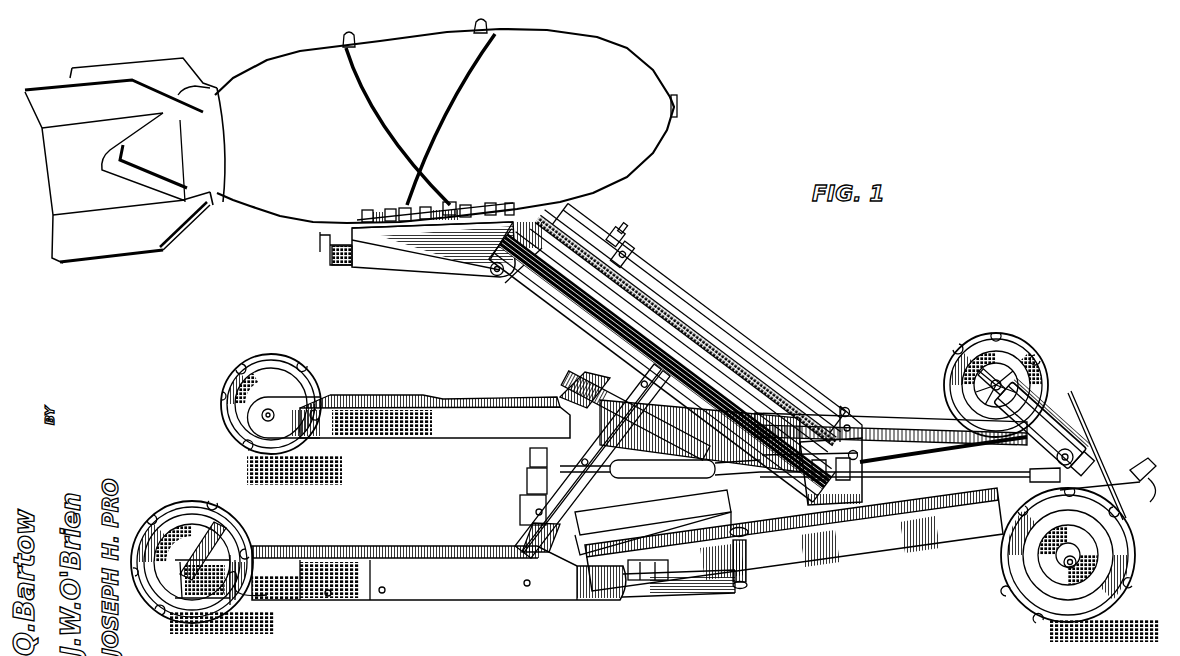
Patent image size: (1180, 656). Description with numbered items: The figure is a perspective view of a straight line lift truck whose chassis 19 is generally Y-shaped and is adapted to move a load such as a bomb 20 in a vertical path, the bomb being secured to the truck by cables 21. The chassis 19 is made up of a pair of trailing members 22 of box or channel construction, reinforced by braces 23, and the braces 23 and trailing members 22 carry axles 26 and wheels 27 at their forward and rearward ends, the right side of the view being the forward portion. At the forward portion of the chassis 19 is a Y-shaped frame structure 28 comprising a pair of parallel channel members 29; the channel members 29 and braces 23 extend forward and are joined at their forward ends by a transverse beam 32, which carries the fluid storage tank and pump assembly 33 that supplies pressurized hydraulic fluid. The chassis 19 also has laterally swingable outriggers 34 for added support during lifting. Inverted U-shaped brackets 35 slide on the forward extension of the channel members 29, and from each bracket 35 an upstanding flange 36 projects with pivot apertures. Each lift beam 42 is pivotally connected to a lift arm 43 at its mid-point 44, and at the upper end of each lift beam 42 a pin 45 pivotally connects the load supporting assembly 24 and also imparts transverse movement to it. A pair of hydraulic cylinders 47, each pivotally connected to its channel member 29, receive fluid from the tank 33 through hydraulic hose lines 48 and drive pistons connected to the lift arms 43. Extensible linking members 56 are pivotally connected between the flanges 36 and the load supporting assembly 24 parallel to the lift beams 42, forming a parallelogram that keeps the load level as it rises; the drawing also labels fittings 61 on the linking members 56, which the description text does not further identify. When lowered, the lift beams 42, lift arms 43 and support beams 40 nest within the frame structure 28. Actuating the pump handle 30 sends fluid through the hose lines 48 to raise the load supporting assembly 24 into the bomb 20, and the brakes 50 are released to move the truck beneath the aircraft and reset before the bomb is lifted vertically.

The chassis 19 is at (847, 568).
The bomb 20 is at (542, 106).
The cables 21 is at (450, 100).
The trailing members 22 is at (467, 407).
The braces 23 is at (893, 418).
The load supporting assembly 24 is at (402, 274).
The axles 26 is at (262, 415).
The wheels 27 is at (192, 502).
The Y-shaped frame structure 28 is at (506, 515).
The parallel channel members 29 is at (895, 465).
The pump handle 30 is at (1071, 452).
The transverse beam 32 is at (1027, 477).
The fluid storage tank and pump assembly 33 is at (1042, 422).
The outriggers 34 is at (700, 568).
The inverted U-shaped brackets 35 is at (816, 474).
The flange 36 is at (855, 450).
The support beams 40 is at (583, 380).
The lift beams 42 is at (624, 323).
The lift arm 43 is at (530, 478).
The mid-point pivotal connection 44 is at (661, 372).
The pin 45 is at (494, 276).
The hydraulic cylinders 47 is at (650, 466).
The hydraulic hose lines 48 is at (935, 453).
The brakes 50 is at (238, 533).
The extensible linking members 56 is at (745, 360).
The clamps 61 is at (628, 251).